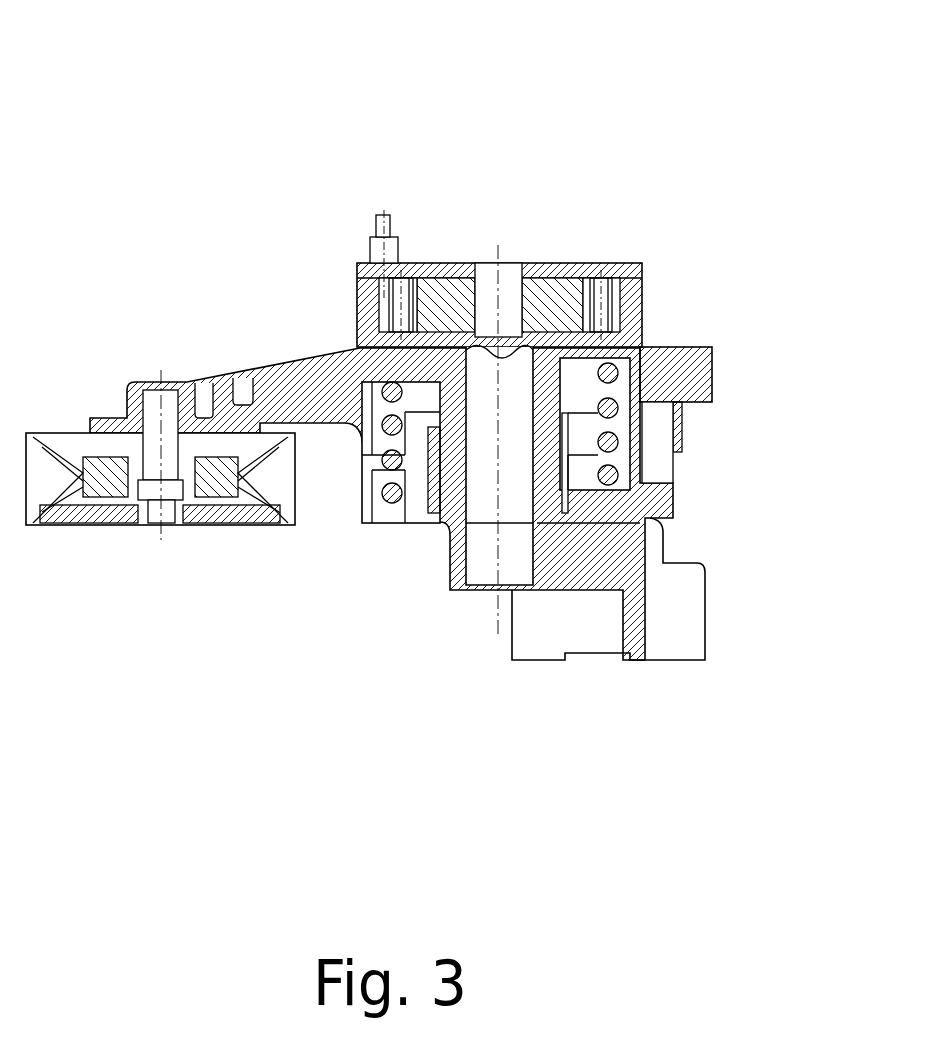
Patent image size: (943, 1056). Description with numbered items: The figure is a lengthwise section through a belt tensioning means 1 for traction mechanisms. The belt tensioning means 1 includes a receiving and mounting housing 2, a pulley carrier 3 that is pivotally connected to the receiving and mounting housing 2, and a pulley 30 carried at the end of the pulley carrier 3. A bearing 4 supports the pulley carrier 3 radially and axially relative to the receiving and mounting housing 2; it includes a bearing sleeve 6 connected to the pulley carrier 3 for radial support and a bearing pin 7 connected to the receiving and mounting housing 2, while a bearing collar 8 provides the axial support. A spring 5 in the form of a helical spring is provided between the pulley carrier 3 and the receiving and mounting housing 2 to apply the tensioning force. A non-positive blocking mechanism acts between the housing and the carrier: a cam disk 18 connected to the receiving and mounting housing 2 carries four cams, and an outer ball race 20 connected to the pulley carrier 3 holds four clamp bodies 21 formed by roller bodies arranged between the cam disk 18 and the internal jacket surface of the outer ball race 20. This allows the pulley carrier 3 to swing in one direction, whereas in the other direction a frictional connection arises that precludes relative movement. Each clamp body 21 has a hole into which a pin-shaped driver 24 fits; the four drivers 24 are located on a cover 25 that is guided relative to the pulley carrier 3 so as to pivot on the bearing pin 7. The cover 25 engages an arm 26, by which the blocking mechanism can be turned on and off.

The belt tensioning means 1 is at (473, 181).
The receiving and mounting housing 2 is at (435, 580).
The pulley carrier 3 is at (260, 355).
The bearing 4 is at (395, 533).
The spring 5 is at (560, 455).
The bearing sleeve 6 is at (570, 440).
The bearing pin 7 is at (480, 568).
The bearing collar 8 is at (560, 540).
The cam disk 18 is at (555, 293).
The outer ball race 20 is at (373, 318).
The clamp bodies 21 is at (617, 303).
The pin-shaped driver 24 is at (600, 293).
The cover 25 is at (433, 270).
The arm 26 is at (386, 212).
The pulley 30 is at (50, 533).